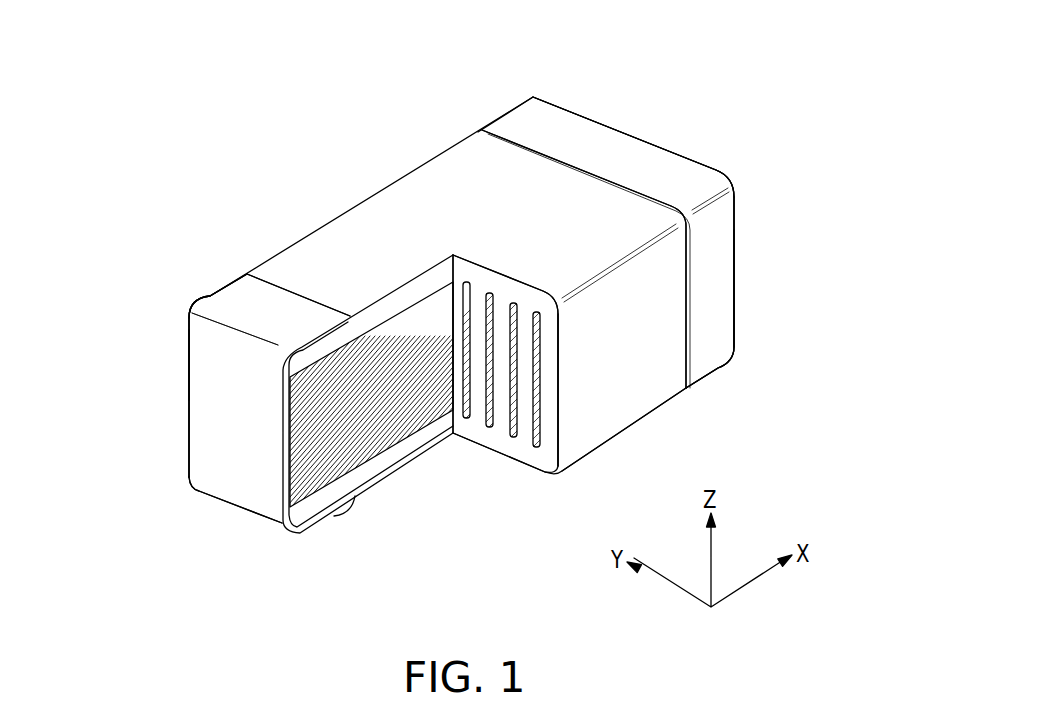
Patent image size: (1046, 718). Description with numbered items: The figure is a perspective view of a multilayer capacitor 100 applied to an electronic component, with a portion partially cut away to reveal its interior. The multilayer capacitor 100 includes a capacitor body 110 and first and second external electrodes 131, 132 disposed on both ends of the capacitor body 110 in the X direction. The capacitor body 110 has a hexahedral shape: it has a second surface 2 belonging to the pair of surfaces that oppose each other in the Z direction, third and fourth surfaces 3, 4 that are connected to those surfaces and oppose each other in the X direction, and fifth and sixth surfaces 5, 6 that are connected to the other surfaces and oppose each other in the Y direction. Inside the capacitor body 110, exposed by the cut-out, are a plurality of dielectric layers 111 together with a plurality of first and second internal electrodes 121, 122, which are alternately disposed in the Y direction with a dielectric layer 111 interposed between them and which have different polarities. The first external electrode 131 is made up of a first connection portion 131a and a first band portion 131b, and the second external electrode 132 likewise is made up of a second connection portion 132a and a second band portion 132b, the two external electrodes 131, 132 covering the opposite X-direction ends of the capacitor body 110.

The multilayer capacitor 100 is at (231, 92).
The capacitor body 110 is at (300, 214).
The second surface 2 is at (441, 172).
The third surface 3 is at (210, 441).
The fourth surface 4 is at (620, 103).
The fifth surface 5 is at (630, 355).
The sixth surface 6 is at (426, 226).
The dielectric layer 111 is at (502, 423).
The first internal electrode 121 is at (303, 405).
The second internal electrode 122 is at (512, 433).
The first external electrode 131 is at (97, 245).
The first connection portion 131a is at (205, 326).
The first band portion 131b is at (208, 307).
The second external electrode 132 is at (828, 145).
The second connection portion 132a is at (737, 258).
The second band portion 132b is at (672, 167).